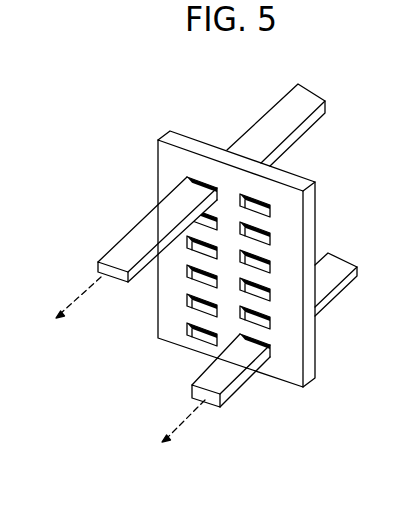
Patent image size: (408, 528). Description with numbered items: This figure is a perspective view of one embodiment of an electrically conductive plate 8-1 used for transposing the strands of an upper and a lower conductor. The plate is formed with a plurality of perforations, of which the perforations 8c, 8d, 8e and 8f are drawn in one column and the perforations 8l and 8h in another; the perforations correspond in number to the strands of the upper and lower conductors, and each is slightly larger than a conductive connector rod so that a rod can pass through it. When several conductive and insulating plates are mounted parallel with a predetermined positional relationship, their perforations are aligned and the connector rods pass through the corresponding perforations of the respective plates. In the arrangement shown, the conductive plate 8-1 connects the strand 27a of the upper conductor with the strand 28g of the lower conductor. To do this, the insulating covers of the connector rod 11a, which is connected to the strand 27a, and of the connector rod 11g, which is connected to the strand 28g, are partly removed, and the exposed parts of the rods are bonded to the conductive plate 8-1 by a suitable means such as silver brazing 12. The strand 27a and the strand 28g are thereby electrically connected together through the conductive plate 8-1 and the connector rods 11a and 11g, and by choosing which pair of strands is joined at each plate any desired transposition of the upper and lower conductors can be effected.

The conductive plate 8-1 is at (289, 372).
The silver brazing 12 is at (198, 176).
The perforation 8c is at (200, 246).
The perforation 8d is at (198, 276).
The perforation 8e is at (198, 305).
The perforation 8f is at (200, 331).
The perforation 8l is at (259, 205).
The perforation 8h is at (267, 318).
The connector rod 11a is at (140, 245).
The connector rod 11g is at (223, 386).
The strand of the upper conductor 27a is at (65, 311).
The strand of the lower conductor 28g is at (167, 433).